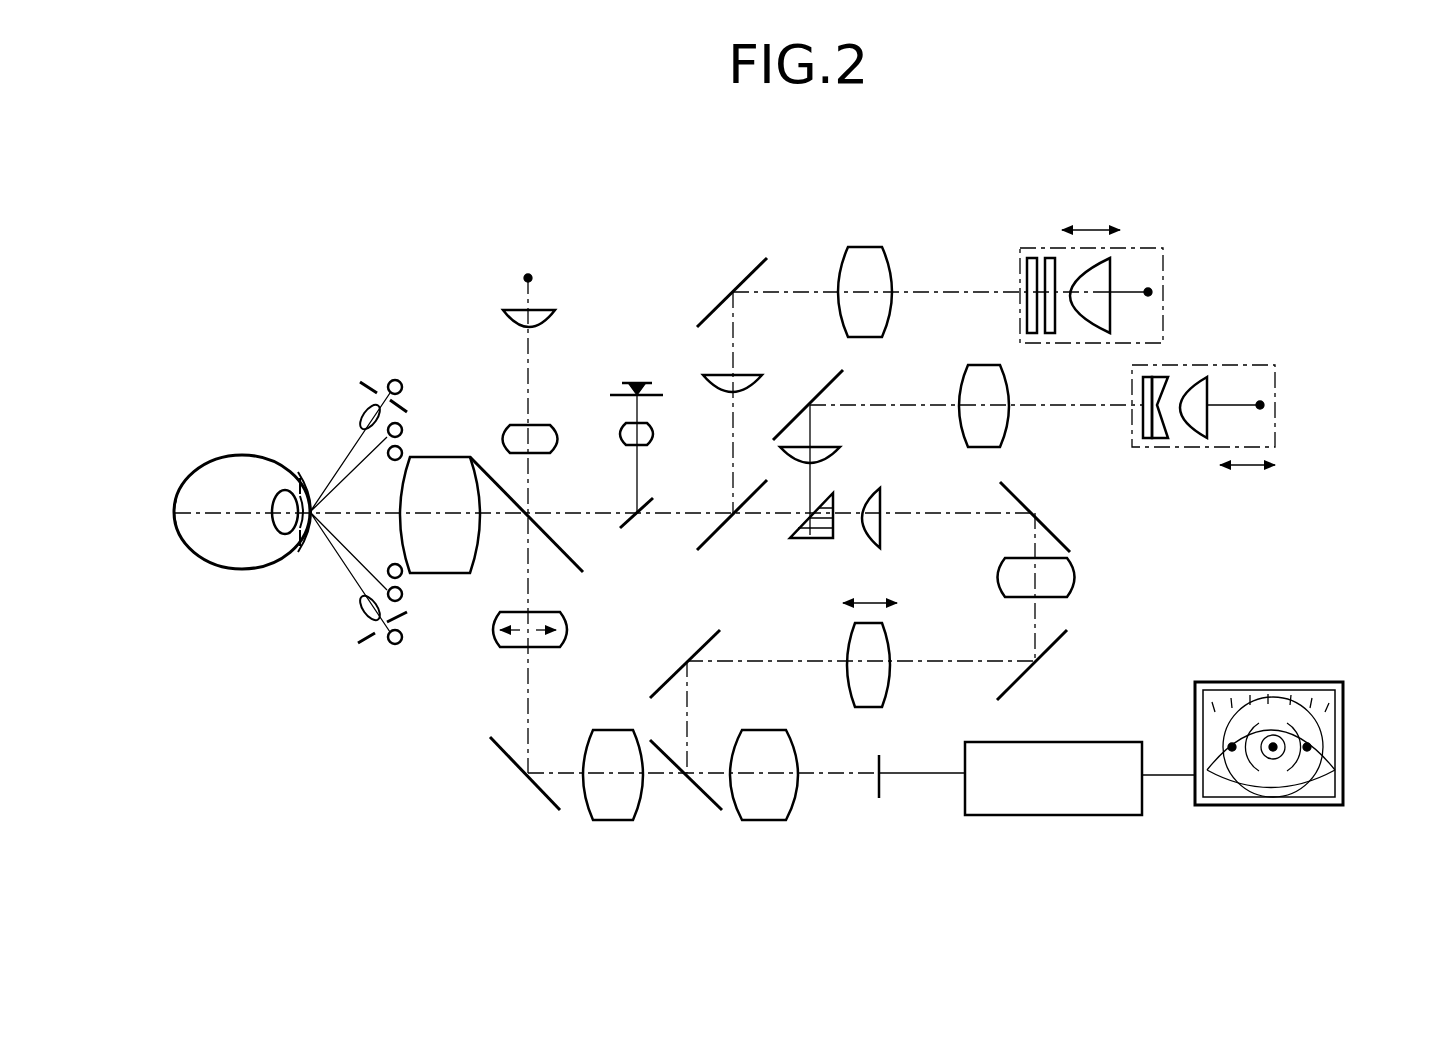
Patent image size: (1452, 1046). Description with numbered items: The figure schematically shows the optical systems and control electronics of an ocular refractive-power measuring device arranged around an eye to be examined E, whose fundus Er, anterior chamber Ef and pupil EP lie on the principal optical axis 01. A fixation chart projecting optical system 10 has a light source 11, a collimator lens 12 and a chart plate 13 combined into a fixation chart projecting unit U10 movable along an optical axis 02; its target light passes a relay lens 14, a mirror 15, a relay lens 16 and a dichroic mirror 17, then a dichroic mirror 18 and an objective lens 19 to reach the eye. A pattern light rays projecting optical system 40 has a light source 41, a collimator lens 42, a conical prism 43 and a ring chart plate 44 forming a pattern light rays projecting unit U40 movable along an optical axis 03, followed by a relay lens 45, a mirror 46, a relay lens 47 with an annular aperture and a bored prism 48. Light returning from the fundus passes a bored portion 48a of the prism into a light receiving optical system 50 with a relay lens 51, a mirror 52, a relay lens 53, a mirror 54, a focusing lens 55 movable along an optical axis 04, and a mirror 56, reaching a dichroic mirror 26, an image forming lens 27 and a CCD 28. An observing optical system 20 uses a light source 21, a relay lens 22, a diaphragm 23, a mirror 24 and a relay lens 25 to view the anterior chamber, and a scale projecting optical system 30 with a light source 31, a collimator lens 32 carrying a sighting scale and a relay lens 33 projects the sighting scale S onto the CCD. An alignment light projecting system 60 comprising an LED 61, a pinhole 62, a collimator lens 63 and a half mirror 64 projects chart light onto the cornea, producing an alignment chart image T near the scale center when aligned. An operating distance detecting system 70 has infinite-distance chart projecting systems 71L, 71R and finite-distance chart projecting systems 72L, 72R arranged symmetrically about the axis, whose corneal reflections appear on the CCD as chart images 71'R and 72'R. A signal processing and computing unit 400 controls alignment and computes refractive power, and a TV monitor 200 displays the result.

The principal optical axis 01 is at (675, 520).
The optical axis of fixation chart projecting optical system 02 is at (805, 290).
The optical axis of pattern light rays projecting optical system 03 is at (1090, 405).
The optical axis of light receiving optical system 04 is at (948, 660).
The operating distance detecting system 70 is at (280, 402).
The eye to be examined E is at (236, 446).
The pupil EP is at (293, 493).
The fundus Er is at (178, 518).
The anterior chamber Ef is at (298, 542).
The semi-arc infinite-distance chart projecting system 71L is at (350, 440).
The semi-arc infinite-distance chart projecting system 71R is at (358, 605).
The light source 21 is at (405, 425).
The finite-distance chart projecting system 72L is at (388, 455).
The finite-distance chart projecting system 72R is at (385, 568).
The objective lens 19 is at (442, 456).
The dichroic mirror 18 is at (582, 567).
The scale projecting optical system 30 is at (552, 386).
The light source 31 is at (532, 278).
The collimator lens provided with sighting scale 32 is at (503, 316).
The relay lens 33 is at (558, 438).
The relay lens 22 is at (560, 618).
The diaphragm 23 is at (497, 640).
The alignment light projecting system 60 is at (618, 412).
The LED 61 is at (637, 383).
The pinhole 62 is at (655, 396).
The collimator lens 63 is at (655, 437).
The half mirror 64 is at (653, 500).
The mirror 15 is at (728, 294).
The relay lens 16 is at (703, 378).
The dichroic mirror 17 is at (724, 545).
The relay lens 14 is at (875, 265).
The fixation chart projecting optical system 10 is at (942, 273).
The fixation chart projecting unit U10 is at (1165, 250).
The chart plate 13 is at (1040, 258).
The collimator lens 12 is at (1100, 275).
The light source 11 is at (1152, 292).
The pattern light rays projecting optical system 40 is at (1234, 356).
The pattern light rays projecting unit U40 is at (1275, 365).
The ring chart plate 44 is at (1146, 440).
The conical prism 43 is at (1158, 440).
The collimator lens 42 is at (1195, 440).
The light source 41 is at (1265, 405).
The relay lens 45 is at (1008, 440).
The mirror 46 is at (827, 372).
The relay lens 47 is at (840, 455).
The bored prism 48 is at (805, 538).
The bored portion 48a is at (834, 532).
The relay lens 51 is at (880, 495).
The light receiving optical system 50 is at (1094, 610).
The mirror 52 is at (1058, 542).
The relay lens 53 is at (1080, 578).
The mirror 54 is at (1025, 678).
The focusing lens 55 is at (882, 692).
The mirror 56 is at (688, 658).
The observing optical system 20 is at (824, 800).
The mirror 24 is at (503, 753).
The relay lens 25 is at (612, 821).
The dichroic mirror 26 is at (705, 798).
The image forming lens 27 is at (768, 821).
The CCD 28 is at (880, 795).
The signal processing and computing unit 400 is at (1000, 816).
The TV monitor 200 is at (1208, 806).
The chart image 71'R is at (1238, 688).
The chart image 72'R is at (1370, 742).
The sighting scale S is at (1270, 757).
The alignment chart image T is at (1276, 752).